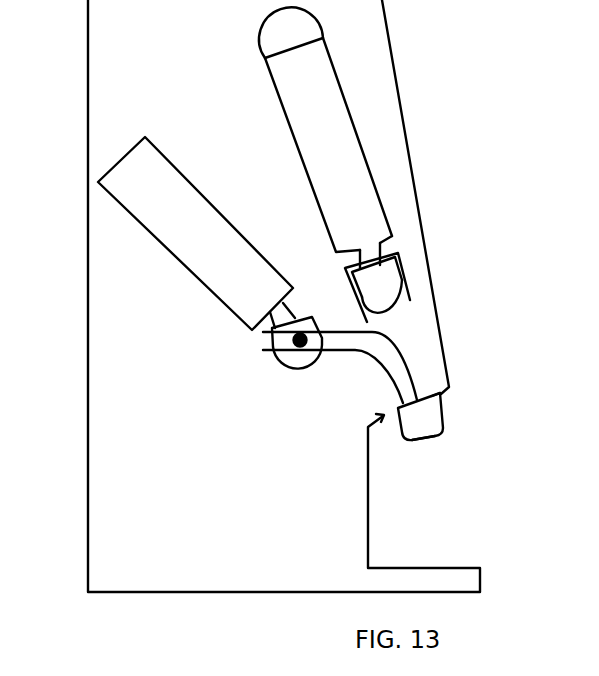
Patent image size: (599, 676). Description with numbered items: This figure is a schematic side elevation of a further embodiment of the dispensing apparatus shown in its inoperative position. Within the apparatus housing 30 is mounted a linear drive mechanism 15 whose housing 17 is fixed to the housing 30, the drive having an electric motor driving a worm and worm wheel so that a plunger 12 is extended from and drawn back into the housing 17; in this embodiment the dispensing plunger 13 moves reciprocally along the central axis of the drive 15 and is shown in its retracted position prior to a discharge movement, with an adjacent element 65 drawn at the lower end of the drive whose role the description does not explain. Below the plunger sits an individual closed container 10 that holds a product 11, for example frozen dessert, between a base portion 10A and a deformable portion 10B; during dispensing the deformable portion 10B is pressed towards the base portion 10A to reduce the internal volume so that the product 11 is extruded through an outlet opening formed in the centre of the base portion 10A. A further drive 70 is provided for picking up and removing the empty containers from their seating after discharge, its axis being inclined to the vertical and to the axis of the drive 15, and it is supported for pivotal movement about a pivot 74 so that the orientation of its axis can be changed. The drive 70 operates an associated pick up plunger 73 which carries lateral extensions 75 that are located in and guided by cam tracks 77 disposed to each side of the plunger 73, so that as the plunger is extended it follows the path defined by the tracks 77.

The container 10 is at (470, 416).
The base portion 10A is at (441, 435).
The deformable portion 10B is at (436, 402).
The product 11 is at (417, 425).
The plunger 12 is at (410, 243).
The plunger 13 is at (405, 307).
The drive mechanism 15 is at (360, 97).
The housing 17 is at (359, 137).
The housing 30 is at (85, 297).
The cup holder 65 is at (402, 268).
The drive 70 is at (244, 212).
The pick up plunger 73 is at (280, 362).
The pivot 74 is at (104, 146).
The lateral extensions 75 is at (296, 352).
The cam tracks 77 is at (342, 354).